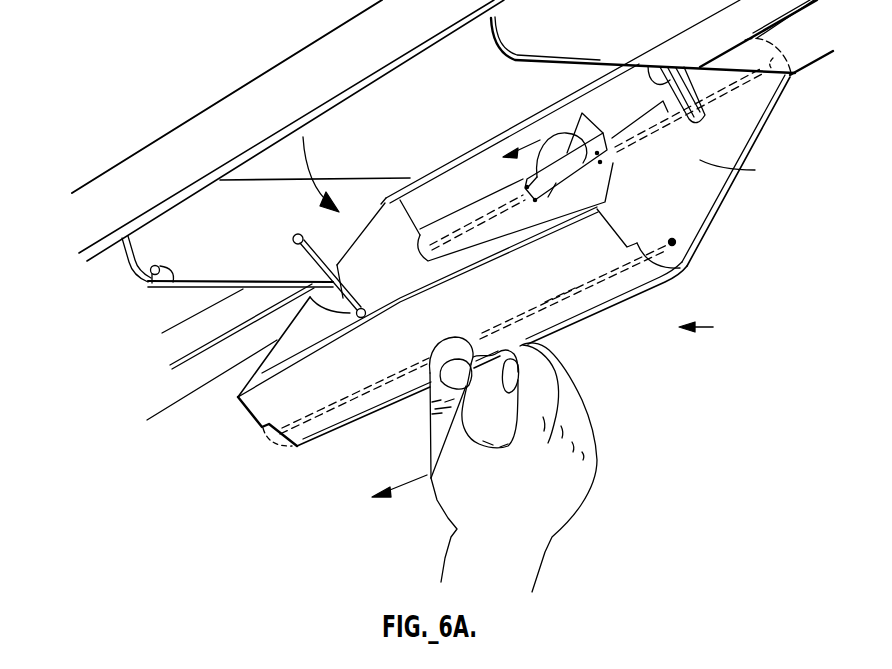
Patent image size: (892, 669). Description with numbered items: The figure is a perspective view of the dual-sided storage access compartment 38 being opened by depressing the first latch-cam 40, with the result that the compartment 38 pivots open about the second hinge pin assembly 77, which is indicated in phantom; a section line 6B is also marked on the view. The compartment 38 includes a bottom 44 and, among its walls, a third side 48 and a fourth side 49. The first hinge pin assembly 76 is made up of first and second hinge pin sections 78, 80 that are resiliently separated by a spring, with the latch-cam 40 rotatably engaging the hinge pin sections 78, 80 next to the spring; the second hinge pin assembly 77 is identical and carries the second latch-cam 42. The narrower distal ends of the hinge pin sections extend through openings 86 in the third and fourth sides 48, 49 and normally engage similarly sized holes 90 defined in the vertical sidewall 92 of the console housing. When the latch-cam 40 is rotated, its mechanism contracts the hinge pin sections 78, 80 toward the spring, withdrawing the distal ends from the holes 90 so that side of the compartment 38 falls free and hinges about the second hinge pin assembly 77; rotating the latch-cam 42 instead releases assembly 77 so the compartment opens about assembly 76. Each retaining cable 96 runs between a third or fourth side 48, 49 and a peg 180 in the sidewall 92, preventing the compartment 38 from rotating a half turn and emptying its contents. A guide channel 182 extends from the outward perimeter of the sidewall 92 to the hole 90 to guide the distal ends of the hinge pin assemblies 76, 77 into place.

The dual-sided storage access compartment 38 is at (708, 327).
The first latch-cam 40 is at (425, 392).
The second latch-cam 42 is at (538, 202).
The bottom 44 is at (717, 206).
The third side 48 is at (278, 342).
The fourth side 49 is at (737, 170).
The first hinge pin assembly 76 is at (299, 447).
The second hinge pin assembly 77 is at (450, 228).
The first hinge pin section 78 is at (363, 388).
The second hinge pin section 80 is at (537, 302).
The openings 86 is at (677, 242).
The hole 90 is at (168, 294).
The vertical sidewall 92 is at (200, 233).
The retaining cable 96 is at (313, 266).
The peg 180 is at (296, 233).
The guide channel 182 is at (148, 288).
The section line 6B is at (445, 327).